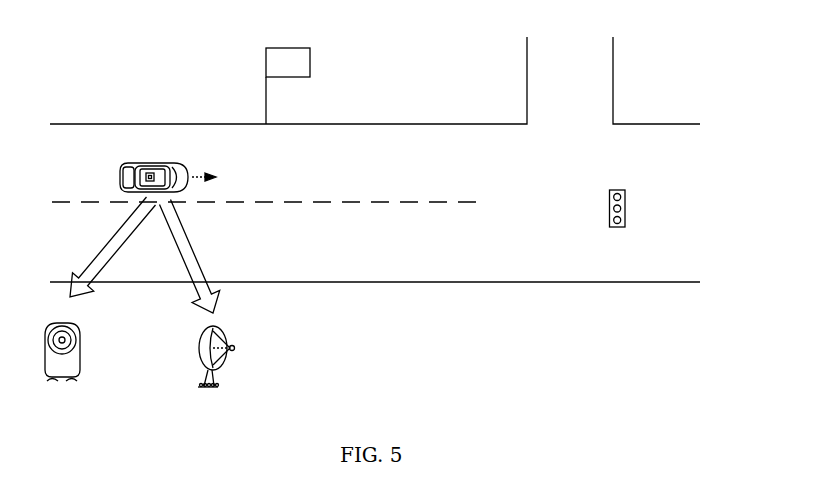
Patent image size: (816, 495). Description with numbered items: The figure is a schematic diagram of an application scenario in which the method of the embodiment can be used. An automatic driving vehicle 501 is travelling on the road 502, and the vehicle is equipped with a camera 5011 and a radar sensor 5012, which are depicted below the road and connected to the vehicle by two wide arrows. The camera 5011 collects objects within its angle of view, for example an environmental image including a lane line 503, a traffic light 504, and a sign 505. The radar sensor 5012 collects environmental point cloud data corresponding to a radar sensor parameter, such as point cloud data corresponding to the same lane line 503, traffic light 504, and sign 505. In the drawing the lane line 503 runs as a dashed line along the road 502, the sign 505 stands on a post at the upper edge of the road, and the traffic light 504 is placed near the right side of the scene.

The automatic driving vehicle 501 is at (188, 166).
The road 502 is at (397, 140).
The lane line 503 is at (428, 200).
The traffic light 504 is at (613, 190).
The sign 505 is at (282, 47).
The camera 5011 is at (62, 325).
The radar sensor 5012 is at (213, 336).